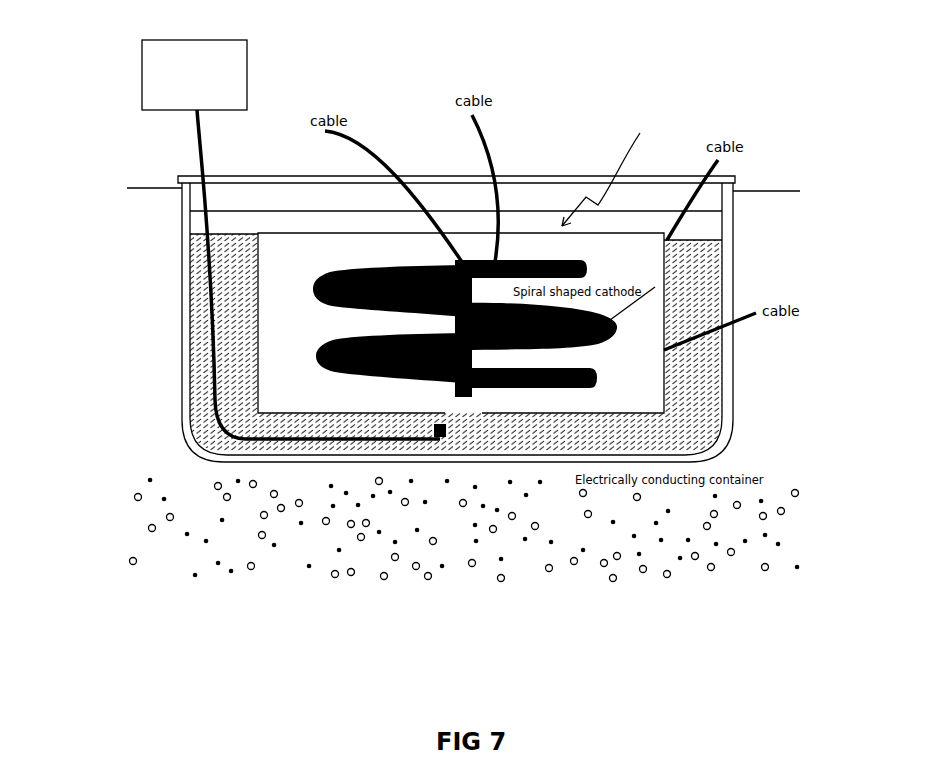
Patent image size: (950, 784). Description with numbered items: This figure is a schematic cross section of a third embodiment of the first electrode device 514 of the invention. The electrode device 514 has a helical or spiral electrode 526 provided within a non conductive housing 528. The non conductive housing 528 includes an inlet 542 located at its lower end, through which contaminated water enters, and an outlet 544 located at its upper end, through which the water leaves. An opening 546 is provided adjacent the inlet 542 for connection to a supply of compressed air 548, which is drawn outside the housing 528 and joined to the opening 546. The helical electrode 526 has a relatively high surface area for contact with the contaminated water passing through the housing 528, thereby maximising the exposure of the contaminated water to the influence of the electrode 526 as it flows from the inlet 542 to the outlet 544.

The supply of compressed air 548 is at (157, 60).
The outlet 544 is at (690, 236).
The electrode device 514 is at (705, 245).
The helical electrode 526 is at (730, 263).
The non conductive housing 528 is at (720, 366).
The inlet 542 is at (450, 438).
The opening 546 is at (457, 435).